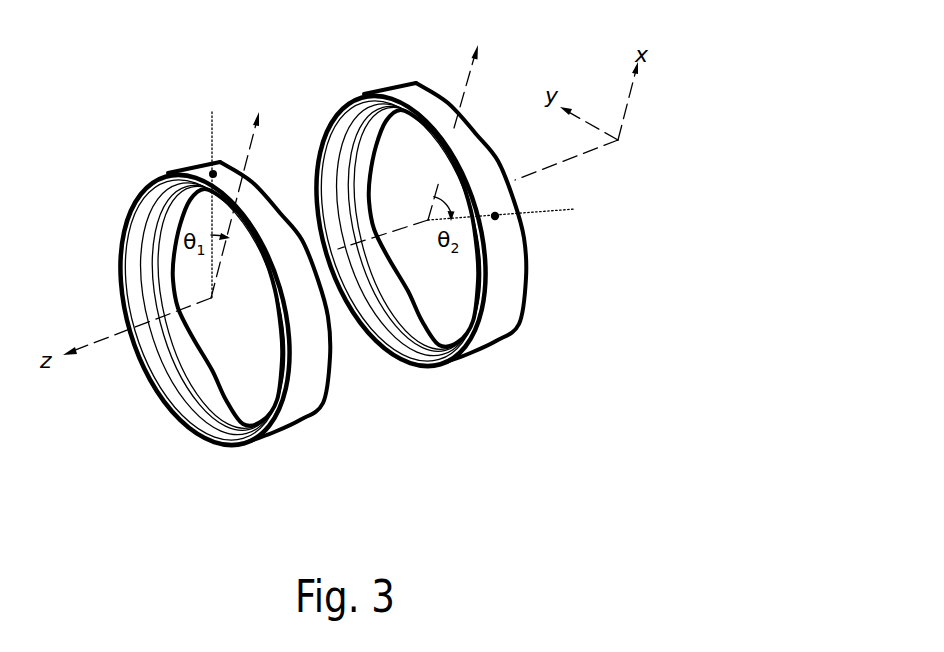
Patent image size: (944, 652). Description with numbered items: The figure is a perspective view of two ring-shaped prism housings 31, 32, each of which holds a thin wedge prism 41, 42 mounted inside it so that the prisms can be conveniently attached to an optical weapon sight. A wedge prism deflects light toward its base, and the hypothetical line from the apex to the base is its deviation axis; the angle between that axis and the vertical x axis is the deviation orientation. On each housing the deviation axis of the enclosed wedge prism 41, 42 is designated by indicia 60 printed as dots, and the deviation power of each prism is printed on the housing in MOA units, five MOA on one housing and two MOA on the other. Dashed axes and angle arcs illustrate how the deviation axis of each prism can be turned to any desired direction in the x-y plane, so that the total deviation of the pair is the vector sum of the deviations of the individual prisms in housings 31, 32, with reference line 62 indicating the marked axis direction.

The prism housing 31 is at (425, 258).
The prism housing 32 is at (226, 335).
The wedge prism 41 is at (447, 297).
The wedge prism 42 is at (252, 368).
The indicia 60 is at (500, 208).
The reference line 62 is at (532, 217).